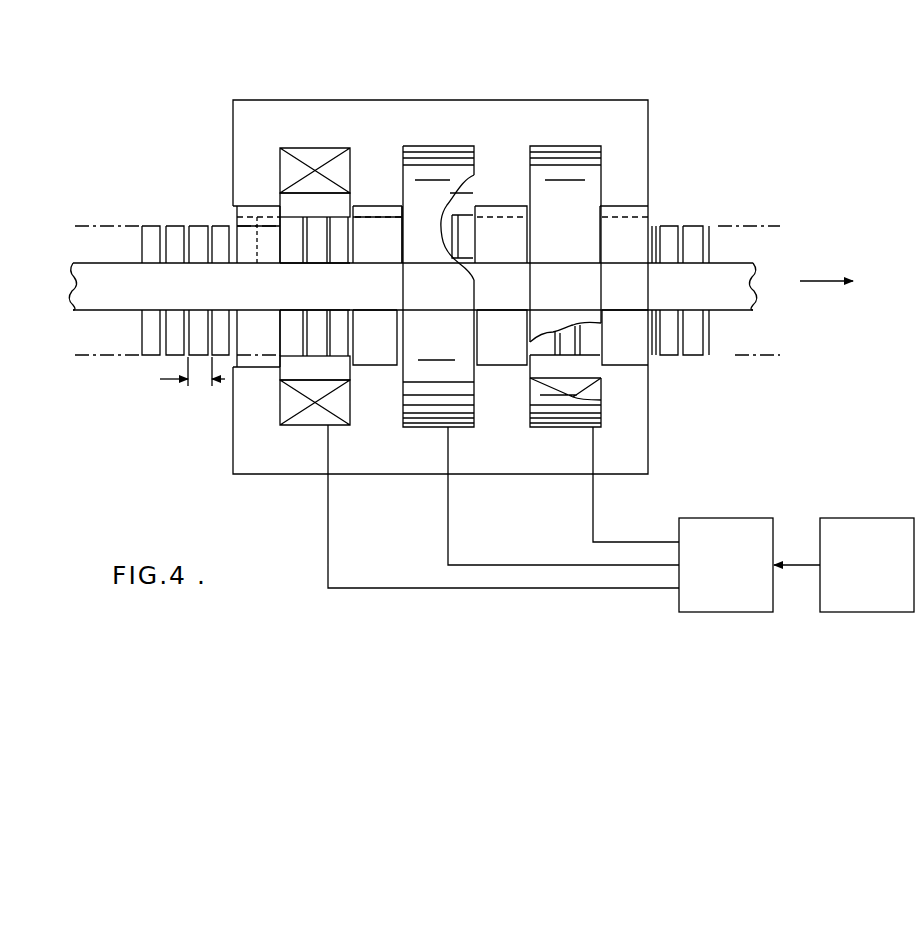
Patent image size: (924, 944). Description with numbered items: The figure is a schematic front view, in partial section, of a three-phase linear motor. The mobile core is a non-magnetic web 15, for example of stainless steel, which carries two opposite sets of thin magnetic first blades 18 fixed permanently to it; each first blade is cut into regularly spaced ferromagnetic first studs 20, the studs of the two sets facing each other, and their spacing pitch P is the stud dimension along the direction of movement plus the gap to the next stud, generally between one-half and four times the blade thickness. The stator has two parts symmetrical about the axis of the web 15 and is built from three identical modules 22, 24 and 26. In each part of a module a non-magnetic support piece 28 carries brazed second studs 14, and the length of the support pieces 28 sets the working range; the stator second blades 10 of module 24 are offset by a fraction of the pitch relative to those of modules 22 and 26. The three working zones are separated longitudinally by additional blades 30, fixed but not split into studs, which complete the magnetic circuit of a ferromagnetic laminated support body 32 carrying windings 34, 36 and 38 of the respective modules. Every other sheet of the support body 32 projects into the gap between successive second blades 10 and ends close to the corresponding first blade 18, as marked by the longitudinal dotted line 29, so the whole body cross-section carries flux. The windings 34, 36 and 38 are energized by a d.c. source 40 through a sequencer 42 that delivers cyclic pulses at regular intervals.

The second blades 10 is at (339, 214).
The second studs 14 is at (338, 245).
The non-magnetic web 15 is at (745, 283).
The first blades 18 is at (720, 237).
The first studs 20 is at (667, 240).
The module 22 is at (330, 231).
The module 24 is at (454, 235).
The module 26 is at (571, 235).
The support piece 28 is at (305, 205).
The longitudinal dotted line 29 is at (383, 220).
The additional blades 30 is at (250, 247).
The support body 32 is at (258, 122).
The winding 34 is at (315, 158).
The winding 36 is at (436, 163).
The winding 38 is at (552, 157).
The d.c. source 40 is at (857, 535).
The sequencer 42 is at (738, 543).
The spacing pitch P is at (184, 374).